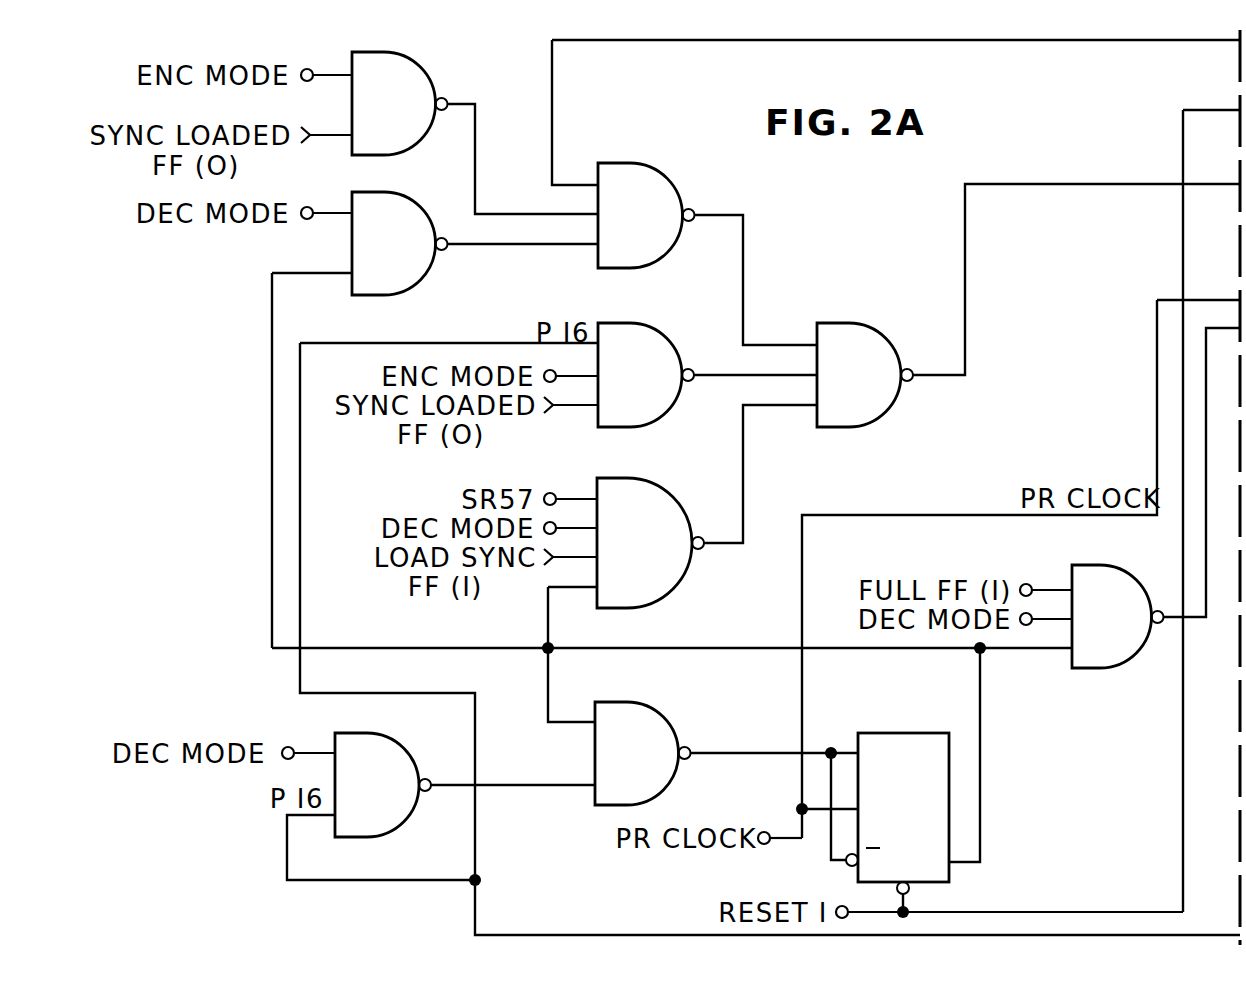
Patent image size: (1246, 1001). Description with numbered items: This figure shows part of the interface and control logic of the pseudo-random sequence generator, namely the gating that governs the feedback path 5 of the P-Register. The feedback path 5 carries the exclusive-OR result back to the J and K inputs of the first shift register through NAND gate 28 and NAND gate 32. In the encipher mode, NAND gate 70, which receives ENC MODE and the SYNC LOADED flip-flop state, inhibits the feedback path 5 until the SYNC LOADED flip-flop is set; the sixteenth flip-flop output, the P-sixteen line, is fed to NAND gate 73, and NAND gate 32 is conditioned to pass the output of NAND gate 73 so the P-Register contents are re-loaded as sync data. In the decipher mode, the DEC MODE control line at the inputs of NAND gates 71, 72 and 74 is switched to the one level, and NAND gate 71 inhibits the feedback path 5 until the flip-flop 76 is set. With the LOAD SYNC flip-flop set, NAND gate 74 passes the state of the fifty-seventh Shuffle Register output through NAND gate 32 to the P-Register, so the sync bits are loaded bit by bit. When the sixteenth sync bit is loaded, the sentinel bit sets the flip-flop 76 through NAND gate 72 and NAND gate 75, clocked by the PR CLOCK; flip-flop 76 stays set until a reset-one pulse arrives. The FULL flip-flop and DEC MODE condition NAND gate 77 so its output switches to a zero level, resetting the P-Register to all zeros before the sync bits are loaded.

The feedback path 5 is at (682, 43).
The NAND gate 28 is at (617, 253).
The NAND gate 32 is at (853, 336).
The NAND gate 70 is at (412, 82).
The NAND gate 71 is at (407, 263).
The NAND gate 72 is at (397, 757).
The NAND gate 73 is at (645, 340).
The NAND gate 74 is at (653, 500).
The NAND gate 75 is at (660, 725).
The flip-flop 76 is at (883, 732).
The NAND gate 77 is at (1102, 655).